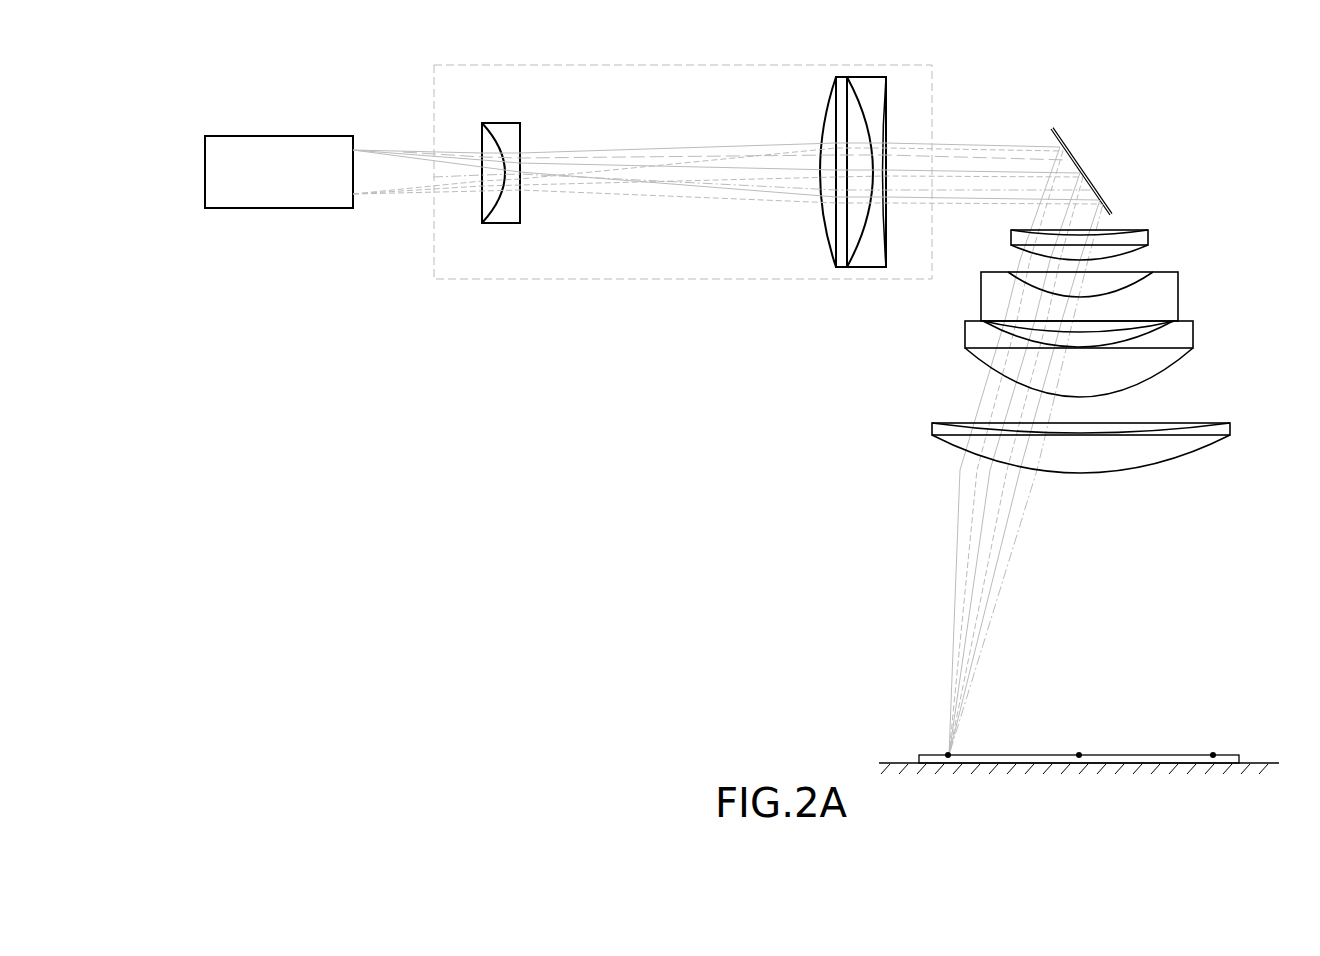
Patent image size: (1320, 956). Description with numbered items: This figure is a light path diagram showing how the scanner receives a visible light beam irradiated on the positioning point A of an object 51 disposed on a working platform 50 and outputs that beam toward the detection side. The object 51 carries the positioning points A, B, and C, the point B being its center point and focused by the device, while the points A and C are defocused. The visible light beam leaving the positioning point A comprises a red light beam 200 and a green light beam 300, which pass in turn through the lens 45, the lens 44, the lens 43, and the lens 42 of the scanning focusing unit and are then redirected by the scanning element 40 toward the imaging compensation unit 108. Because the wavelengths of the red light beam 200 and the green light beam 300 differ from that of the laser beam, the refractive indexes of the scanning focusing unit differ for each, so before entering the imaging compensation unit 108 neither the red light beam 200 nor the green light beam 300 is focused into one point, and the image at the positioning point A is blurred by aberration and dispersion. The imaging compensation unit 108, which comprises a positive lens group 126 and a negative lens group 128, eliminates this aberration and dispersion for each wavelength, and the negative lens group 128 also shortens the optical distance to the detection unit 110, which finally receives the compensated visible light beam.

The detection unit 110 is at (279, 136).
The imaging compensation unit 108 is at (683, 281).
The negative lens group 128 is at (500, 122).
The positive lens group 126 is at (866, 76).
The scanning element 40 is at (1051, 130).
The lens 42 is at (1148, 236).
The lens 43 is at (1178, 281).
The lens 44 is at (1193, 326).
The lens 45 is at (1230, 428).
The red light beam 200 is at (967, 510).
The green light beam 300 is at (955, 536).
The object 51 is at (1238, 753).
The working platform 50 is at (1262, 762).